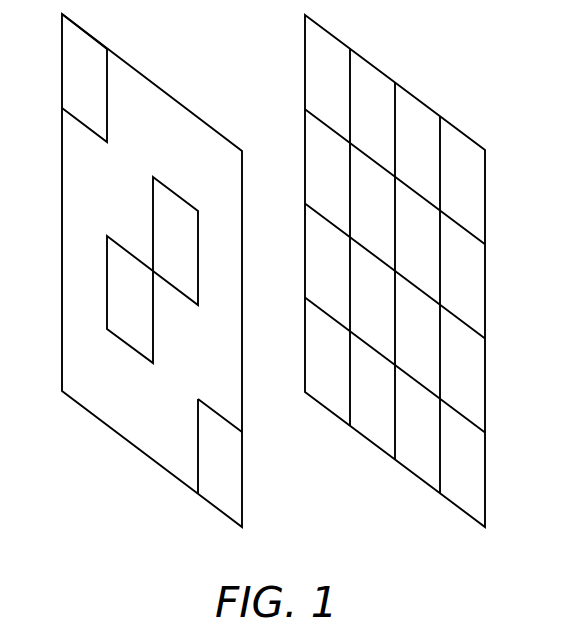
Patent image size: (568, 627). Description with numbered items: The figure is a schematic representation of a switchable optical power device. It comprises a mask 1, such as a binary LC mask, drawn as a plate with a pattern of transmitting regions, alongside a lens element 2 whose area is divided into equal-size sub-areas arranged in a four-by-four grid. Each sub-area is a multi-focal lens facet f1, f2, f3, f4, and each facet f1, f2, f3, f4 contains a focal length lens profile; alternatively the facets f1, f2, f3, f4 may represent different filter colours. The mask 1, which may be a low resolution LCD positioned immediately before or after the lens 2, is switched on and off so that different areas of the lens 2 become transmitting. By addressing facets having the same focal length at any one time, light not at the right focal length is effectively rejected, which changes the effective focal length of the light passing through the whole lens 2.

The mask 1 is at (62, 379).
The lens element 2 is at (419, 271).
The lens facet f1 is at (395, 270).
The lens facet f2 is at (395, 236).
The lens facet f3 is at (395, 270).
The lens facet f4 is at (395, 304).